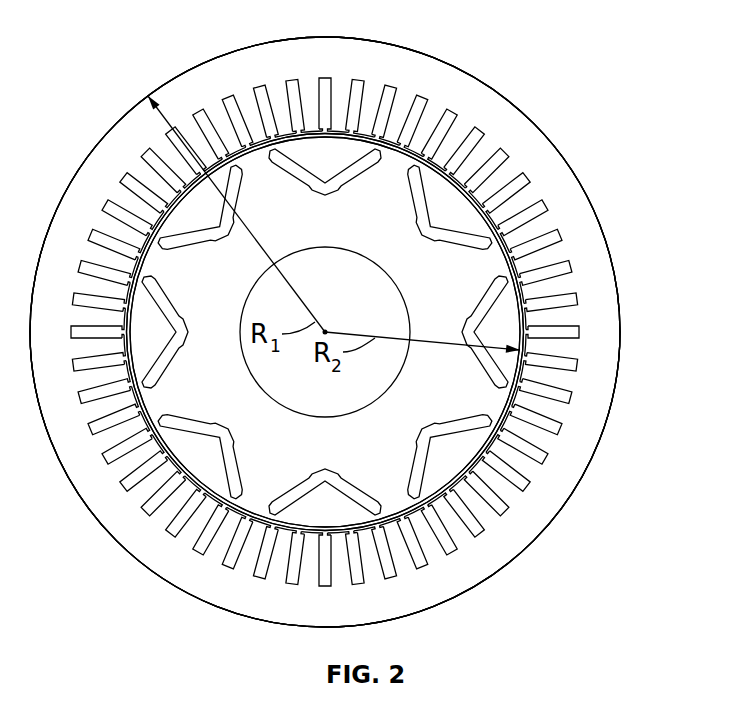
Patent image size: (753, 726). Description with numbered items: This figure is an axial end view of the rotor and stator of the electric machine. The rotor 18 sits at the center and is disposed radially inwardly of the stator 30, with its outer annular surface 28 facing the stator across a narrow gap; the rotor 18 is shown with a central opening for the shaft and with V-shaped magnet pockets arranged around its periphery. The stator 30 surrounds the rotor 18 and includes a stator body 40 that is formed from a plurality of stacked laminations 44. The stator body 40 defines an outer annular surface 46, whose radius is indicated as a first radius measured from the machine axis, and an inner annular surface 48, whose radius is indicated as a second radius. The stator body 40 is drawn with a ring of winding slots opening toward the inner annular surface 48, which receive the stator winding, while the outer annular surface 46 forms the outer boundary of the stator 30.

The rotor 18 is at (440, 270).
The outer annular surface 28 is at (522, 328).
The stator 30 is at (585, 504).
The stator body 40 is at (496, 588).
The stacked laminations 44 is at (147, 542).
The outer annular surface 46 is at (454, 70).
The inner annular surface 48 is at (522, 380).